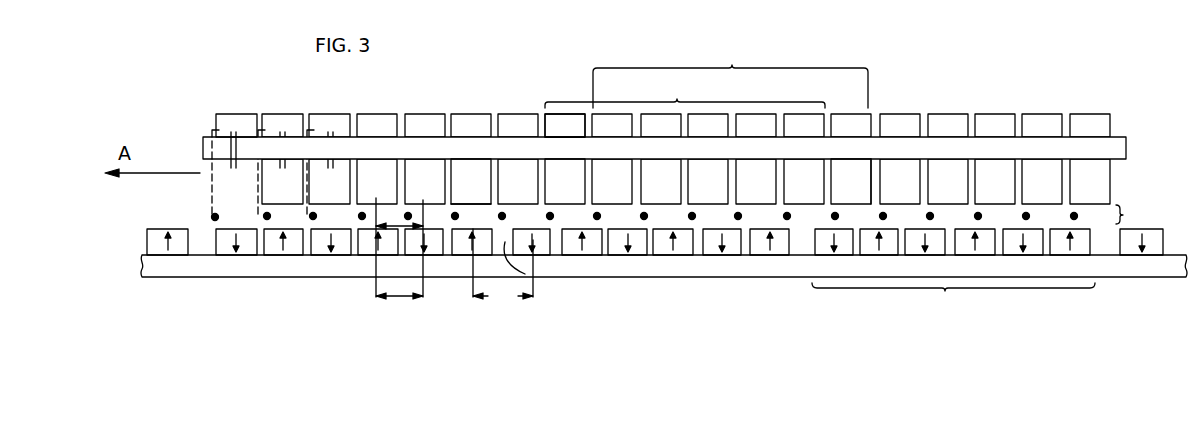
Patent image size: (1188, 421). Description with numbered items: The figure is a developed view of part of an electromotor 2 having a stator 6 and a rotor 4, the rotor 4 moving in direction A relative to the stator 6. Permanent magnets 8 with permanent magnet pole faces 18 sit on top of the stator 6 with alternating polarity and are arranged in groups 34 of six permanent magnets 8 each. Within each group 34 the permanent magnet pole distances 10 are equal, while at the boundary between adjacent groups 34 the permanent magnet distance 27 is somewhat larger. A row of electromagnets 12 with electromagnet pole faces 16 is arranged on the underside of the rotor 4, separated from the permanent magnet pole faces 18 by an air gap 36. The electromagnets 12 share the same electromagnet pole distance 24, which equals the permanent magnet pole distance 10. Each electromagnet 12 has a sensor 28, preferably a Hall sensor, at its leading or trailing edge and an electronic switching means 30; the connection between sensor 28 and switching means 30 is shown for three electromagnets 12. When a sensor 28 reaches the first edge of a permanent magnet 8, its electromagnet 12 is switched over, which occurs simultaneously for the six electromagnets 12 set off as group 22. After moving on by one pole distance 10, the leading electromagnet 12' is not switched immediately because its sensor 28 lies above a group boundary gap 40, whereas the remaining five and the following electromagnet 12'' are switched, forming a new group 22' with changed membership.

The electromotor 2 is at (567, 93).
The rotor 4 is at (1137, 148).
The stator 6 is at (779, 280).
The permanent magnet 8 is at (247, 248).
The permanent magnet pole distance 10 is at (401, 295).
The electromagnet 12 is at (471, 181).
The leading electromagnet 12' is at (565, 159).
The following electromagnet 12'' is at (851, 181).
The electromagnet pole face 16 is at (480, 207).
The permanent magnet pole face 18 is at (295, 243).
The group of electromagnets 22 is at (685, 91).
The group of electromagnets 22' is at (730, 71).
The electromagnet pole distance 24 is at (400, 222).
The permanent magnet distance 27 is at (503, 296).
The sensor 28 is at (210, 218).
The electronic switching means 30 is at (235, 120).
The group of permanent magnets 34 is at (953, 303).
The air gap 36 is at (1134, 213).
The group boundary gap 40 is at (525, 274).